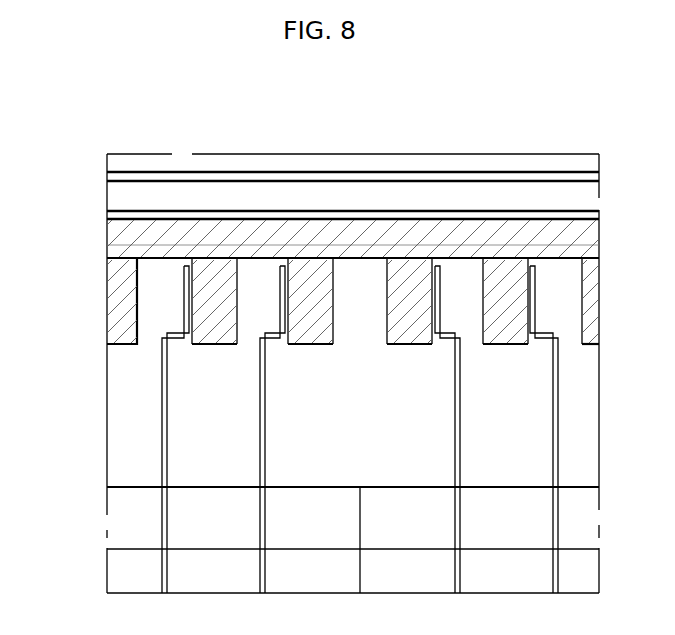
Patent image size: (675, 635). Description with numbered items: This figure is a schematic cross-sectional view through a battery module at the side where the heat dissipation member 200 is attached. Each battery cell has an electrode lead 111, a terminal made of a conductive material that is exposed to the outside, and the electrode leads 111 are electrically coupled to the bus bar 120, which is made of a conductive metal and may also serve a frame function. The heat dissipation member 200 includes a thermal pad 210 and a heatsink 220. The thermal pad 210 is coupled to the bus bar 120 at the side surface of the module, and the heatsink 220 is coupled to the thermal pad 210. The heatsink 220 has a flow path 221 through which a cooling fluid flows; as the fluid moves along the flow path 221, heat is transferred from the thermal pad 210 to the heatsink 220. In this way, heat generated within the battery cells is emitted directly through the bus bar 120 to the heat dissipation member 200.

The heat dissipation member 200 is at (80, 138).
The heatsink 220 is at (205, 172).
The flow path 221 is at (131, 184).
The thermal pad 210 is at (130, 228).
The bus bar 120 is at (130, 258).
The electrode lead 111 is at (184, 310).